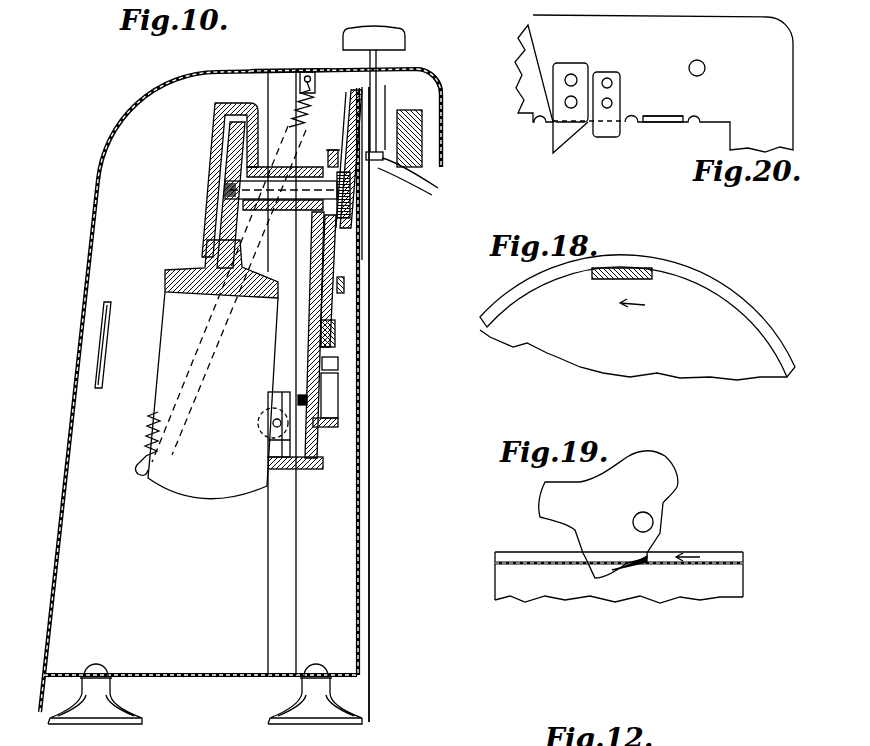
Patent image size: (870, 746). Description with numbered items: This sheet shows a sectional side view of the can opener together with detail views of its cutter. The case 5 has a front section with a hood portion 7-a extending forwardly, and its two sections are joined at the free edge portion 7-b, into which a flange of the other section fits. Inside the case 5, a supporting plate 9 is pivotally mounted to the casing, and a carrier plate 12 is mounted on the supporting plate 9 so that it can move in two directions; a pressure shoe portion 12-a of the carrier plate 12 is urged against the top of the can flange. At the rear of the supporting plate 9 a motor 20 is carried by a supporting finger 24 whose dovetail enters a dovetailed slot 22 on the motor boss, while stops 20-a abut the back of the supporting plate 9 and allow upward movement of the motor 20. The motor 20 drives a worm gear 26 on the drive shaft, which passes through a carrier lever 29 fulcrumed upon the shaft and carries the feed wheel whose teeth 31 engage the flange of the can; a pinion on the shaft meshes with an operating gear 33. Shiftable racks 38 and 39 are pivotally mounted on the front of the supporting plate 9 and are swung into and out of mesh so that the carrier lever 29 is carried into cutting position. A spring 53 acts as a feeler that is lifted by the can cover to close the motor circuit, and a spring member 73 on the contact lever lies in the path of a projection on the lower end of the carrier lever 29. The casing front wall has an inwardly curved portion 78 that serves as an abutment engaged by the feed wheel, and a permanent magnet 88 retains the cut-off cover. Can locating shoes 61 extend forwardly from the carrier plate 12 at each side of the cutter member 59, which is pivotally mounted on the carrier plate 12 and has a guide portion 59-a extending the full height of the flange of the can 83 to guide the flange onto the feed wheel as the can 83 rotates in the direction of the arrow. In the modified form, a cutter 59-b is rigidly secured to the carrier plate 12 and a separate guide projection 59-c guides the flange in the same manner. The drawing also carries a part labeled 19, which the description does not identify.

In FIG. 10, the case 5 is at (63, 452).
In FIG. 10, the hood portion 7-a is at (443, 104).
In FIG. 10, the free edge portion 7-b is at (288, 68).
In FIG. 10, the front wall portion 78 is at (360, 467).
In FIG. 10, the permanent magnet 88 is at (424, 124).
In FIG. 10, the can locating shoes 61 is at (385, 161).
In FIG. 10, the spring 53 is at (376, 136).
In FIG. 10, the pressure shoe portion 12-a is at (410, 173).
In FIG. 20, the pressure shoe portion 12-a is at (622, 121).
In FIG. 10, the stops 20-a is at (251, 292).
In FIG. 10, the worm gear 26 is at (212, 227).
In FIG. 10, the feed wheel teeth 31 is at (368, 212).
In FIG. 10, the carrier lever 29 is at (330, 250).
In FIG. 10, the operating gear 33 is at (310, 317).
In FIG. 10, the shiftable rack 38 is at (347, 282).
In FIG. 10, the shiftable rack 39 is at (335, 340).
In FIG. 10, the supporting plate 9 is at (305, 357).
In FIG. 10, the spring member 73 is at (333, 400).
In FIG. 10, the dovetailed slot 22 is at (272, 415).
In FIG. 10, the supporting finger 24 is at (275, 473).
In FIG. 10, the motor 20 is at (191, 493).
In FIG. 10, the spring hook 19 is at (146, 442).
In FIG. 20, the carrier plate 12 is at (745, 91).
In FIG. 20, the cutter 59-b is at (561, 138).
In FIG. 20, the guide projection 59-c is at (607, 137).
In FIG. 18, the can 83 is at (708, 298).
In FIG. 19, the can 83 is at (736, 583).
In FIG. 18, the cutter member 59 is at (649, 279).
In FIG. 19, the cutter member 59 is at (668, 490).
In FIG. 19, the guide portion 59-a is at (655, 553).